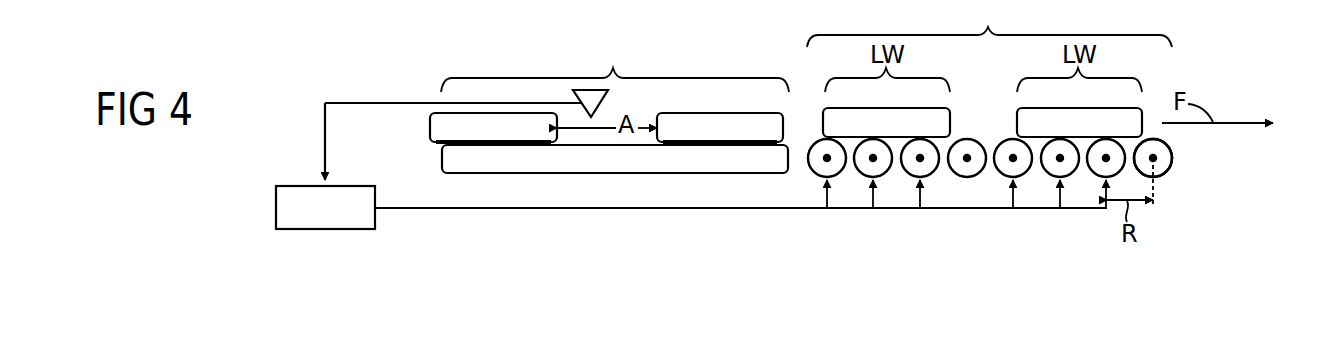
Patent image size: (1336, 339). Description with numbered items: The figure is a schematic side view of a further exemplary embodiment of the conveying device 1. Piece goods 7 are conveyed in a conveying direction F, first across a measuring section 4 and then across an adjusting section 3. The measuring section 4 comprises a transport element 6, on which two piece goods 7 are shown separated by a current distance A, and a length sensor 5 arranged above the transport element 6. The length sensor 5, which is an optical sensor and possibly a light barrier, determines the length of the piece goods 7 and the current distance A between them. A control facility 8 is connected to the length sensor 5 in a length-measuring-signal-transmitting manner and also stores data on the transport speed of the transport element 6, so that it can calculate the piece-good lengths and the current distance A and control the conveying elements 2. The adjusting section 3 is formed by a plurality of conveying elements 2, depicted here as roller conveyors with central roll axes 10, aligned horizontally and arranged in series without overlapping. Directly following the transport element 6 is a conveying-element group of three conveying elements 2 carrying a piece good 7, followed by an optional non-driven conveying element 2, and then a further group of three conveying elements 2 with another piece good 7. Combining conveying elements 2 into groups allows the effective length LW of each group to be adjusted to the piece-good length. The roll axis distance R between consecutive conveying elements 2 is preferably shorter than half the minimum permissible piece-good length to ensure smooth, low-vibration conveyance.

The conveying device 1 is at (232, 164).
The conveying element 2 is at (817, 169).
The adjusting section 3 is at (989, 23).
The measuring section 4 is at (615, 65).
The length sensor 5 is at (605, 99).
The transport element 6 is at (442, 158).
The piece goods 7 is at (430, 128).
The control facility 8 is at (276, 208).
The central roll axis 10 is at (1153, 158).